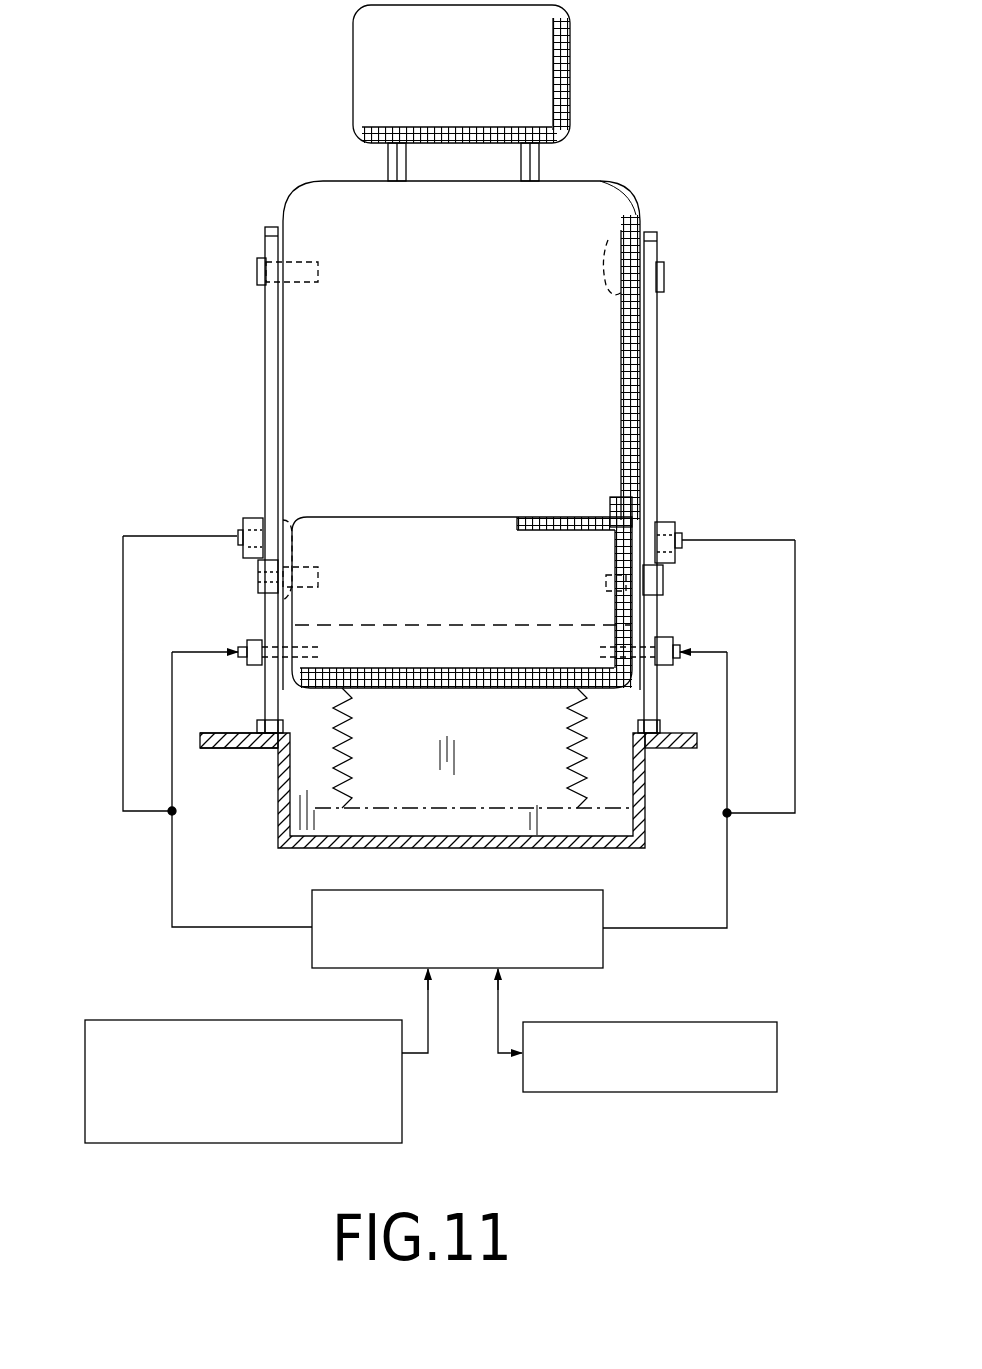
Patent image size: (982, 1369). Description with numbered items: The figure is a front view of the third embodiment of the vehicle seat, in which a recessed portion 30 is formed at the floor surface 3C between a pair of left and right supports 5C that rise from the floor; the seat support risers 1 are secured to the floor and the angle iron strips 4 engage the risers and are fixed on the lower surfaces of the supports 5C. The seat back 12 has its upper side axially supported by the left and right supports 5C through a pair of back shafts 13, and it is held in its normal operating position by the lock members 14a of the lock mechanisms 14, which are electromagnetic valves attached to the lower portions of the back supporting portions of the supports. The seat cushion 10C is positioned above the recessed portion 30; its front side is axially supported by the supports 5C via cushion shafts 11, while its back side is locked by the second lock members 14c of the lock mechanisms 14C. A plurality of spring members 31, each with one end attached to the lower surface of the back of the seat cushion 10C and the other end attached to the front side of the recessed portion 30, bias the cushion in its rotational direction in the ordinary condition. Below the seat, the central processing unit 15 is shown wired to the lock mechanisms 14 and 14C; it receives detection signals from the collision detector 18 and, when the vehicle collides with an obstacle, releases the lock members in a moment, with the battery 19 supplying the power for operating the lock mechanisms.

The seat support riser 1 is at (258, 748).
The floor surface 3C is at (232, 733).
The angle iron strip 4 is at (264, 740).
The support 5C is at (267, 392).
The seat cushion 10C is at (443, 514).
The cushion shaft 11 is at (316, 576).
The seat back 12 is at (592, 180).
The back shaft 13 is at (257, 272).
The lock mechanism 14 is at (244, 515).
The lock member 14a is at (290, 518).
The lock mechanism 14C is at (247, 637).
The second lock member 14c is at (318, 653).
The central processing unit 15 is at (603, 913).
The collision detector 18 is at (175, 1020).
The battery 19 is at (725, 1022).
The recessed portion 30 is at (600, 830).
The spring member 31 is at (350, 790).